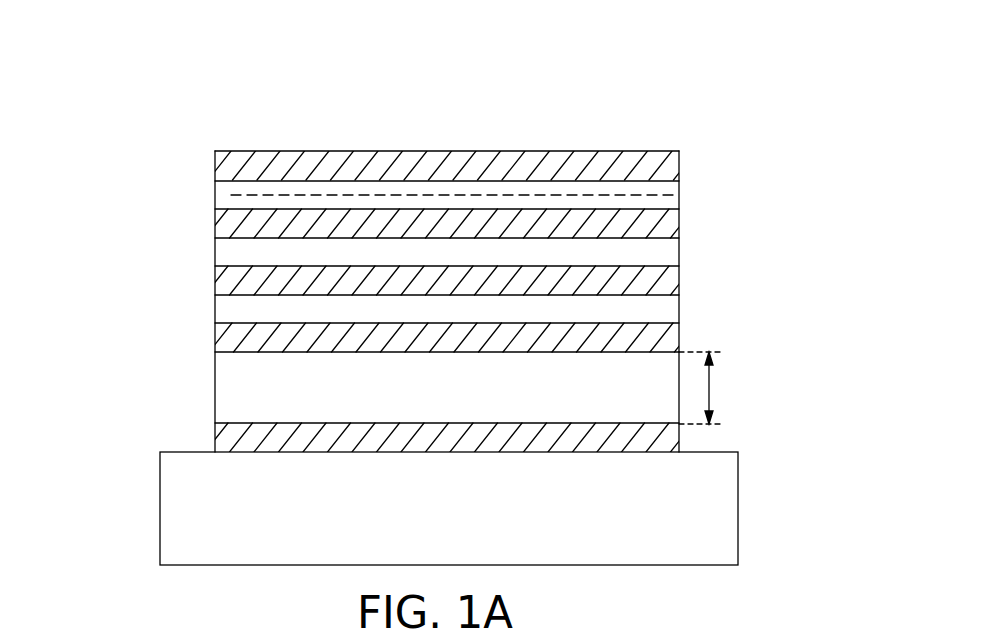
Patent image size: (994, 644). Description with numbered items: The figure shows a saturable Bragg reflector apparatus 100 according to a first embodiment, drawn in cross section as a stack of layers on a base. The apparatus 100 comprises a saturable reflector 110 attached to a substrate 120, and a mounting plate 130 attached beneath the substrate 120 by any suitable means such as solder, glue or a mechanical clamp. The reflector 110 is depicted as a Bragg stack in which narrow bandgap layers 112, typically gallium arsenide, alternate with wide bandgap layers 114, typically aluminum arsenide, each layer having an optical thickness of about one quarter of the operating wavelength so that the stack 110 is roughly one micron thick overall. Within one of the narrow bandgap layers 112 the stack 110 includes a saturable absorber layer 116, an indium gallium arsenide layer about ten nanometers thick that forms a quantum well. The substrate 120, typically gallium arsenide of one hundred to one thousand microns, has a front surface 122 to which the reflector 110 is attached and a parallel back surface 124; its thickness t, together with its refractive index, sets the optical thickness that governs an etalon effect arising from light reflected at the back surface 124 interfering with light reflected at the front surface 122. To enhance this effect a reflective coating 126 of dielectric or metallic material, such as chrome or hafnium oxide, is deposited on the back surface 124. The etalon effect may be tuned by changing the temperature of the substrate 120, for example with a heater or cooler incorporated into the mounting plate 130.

The saturable reflector apparatus 100 is at (300, 77).
The saturable reflector 110 is at (117, 152).
The narrow bandgap layers 112 is at (679, 252).
The wide bandgap layers 114 is at (679, 167).
The saturable absorber layer 116 is at (231, 195).
The substrate 120 is at (465, 409).
The front surface 122 is at (231, 352).
The back surface 124 is at (232, 423).
The reflective coating 126 is at (679, 437).
The mounting plate 130 is at (470, 516).